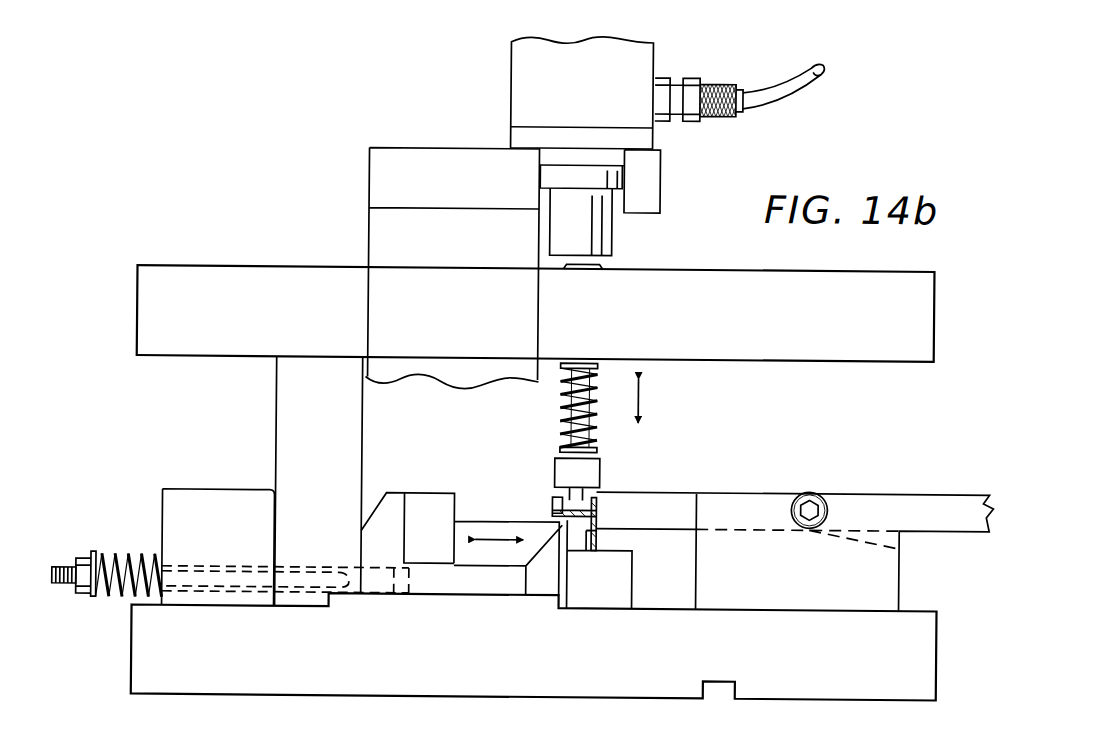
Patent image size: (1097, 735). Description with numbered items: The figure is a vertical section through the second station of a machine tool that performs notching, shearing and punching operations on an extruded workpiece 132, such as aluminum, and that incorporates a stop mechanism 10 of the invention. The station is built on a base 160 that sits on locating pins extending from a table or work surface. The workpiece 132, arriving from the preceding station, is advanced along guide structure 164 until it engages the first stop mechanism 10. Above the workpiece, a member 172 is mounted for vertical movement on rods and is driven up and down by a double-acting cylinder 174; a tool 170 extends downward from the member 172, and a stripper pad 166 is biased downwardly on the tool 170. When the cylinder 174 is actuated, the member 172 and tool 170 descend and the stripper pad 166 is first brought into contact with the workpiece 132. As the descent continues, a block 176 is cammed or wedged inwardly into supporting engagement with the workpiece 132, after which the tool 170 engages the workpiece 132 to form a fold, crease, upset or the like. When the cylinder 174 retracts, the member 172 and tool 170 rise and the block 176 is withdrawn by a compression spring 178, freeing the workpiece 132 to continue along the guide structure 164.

The stop mechanism 10 is at (877, 585).
The workpiece 132 is at (598, 505).
The base 160 is at (838, 661).
The guide structure 164 is at (615, 585).
The stripper pad 166 is at (563, 475).
The tool 170 is at (598, 437).
The member 172 is at (250, 270).
The double-acting cylinder 174 is at (508, 66).
The block 176 is at (436, 500).
The compression spring 178 is at (138, 561).